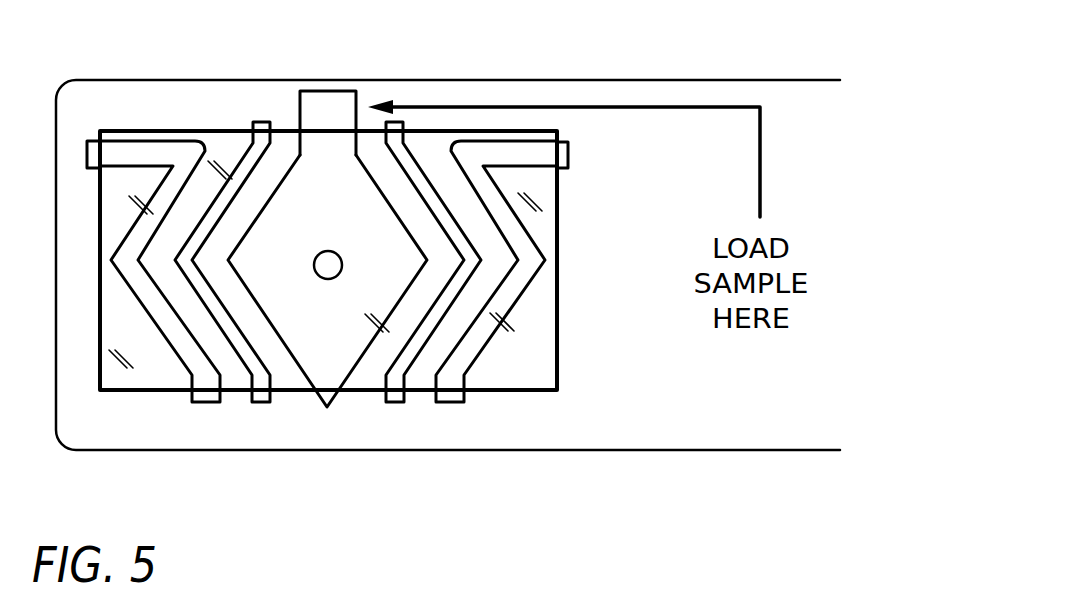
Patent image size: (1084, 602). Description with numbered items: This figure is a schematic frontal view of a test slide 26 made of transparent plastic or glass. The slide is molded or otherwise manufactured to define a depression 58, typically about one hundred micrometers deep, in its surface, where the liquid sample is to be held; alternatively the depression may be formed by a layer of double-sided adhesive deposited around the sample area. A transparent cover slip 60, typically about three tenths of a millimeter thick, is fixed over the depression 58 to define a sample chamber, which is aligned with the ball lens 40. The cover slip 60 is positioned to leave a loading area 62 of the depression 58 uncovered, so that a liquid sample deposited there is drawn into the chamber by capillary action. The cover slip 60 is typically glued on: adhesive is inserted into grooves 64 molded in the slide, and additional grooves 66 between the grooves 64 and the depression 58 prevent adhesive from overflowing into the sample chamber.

The test slide 26 is at (602, 450).
The ball lens 40 is at (318, 255).
The depression 58 is at (338, 407).
The cover slip 60 is at (147, 392).
The loading area 62 is at (326, 91).
The grooves 64 is at (217, 403).
The additional grooves 66 is at (268, 403).